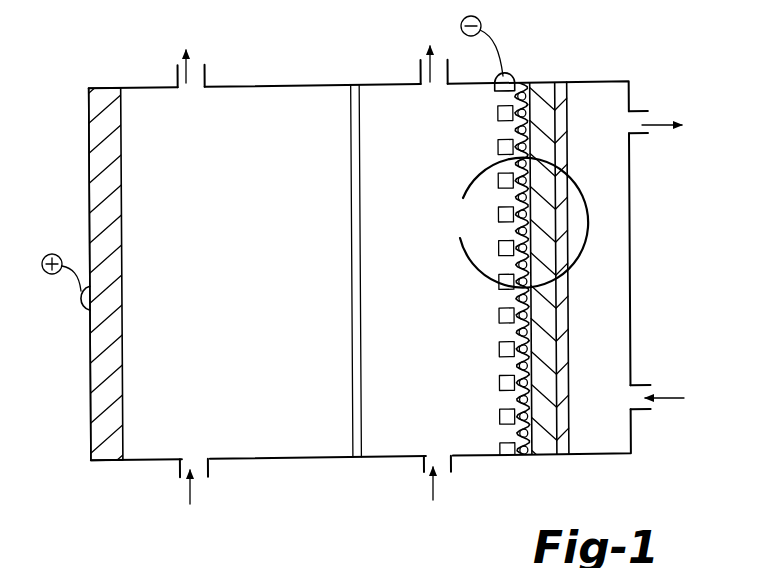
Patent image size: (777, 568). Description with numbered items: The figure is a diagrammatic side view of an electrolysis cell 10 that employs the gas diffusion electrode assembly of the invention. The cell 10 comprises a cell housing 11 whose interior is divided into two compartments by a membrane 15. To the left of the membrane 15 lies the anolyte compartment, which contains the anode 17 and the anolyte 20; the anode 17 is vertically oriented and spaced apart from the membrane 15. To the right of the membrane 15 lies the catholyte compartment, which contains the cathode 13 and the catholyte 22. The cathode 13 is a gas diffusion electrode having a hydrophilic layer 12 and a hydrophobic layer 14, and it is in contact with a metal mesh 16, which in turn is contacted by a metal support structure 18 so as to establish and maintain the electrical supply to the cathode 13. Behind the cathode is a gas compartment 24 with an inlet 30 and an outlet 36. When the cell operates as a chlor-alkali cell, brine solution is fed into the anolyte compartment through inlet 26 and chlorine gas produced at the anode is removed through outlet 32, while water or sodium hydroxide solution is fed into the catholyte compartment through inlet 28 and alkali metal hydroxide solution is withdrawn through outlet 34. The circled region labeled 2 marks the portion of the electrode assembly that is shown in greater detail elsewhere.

The detail area shown in FIG. 2 is at (510, 223).
The electrolysis cell 10 is at (88, 333).
The cell housing 11 is at (88, 90).
The hydrophilic layer 12 is at (538, 456).
The cathode 13 is at (559, 83).
The hydrophobic layer 14 is at (558, 457).
The membrane 15 is at (349, 117).
The metal mesh 16 is at (520, 84).
The anode 17 is at (97, 422).
The metal support structure 18 is at (505, 453).
The anolyte 20 is at (237, 287).
The catholyte 22 is at (440, 283).
The gas compartment 24 is at (614, 308).
The inlet 26 is at (190, 497).
The inlet 28 is at (433, 495).
The inlet 30 is at (677, 399).
The outlet 32 is at (188, 52).
The outlet 34 is at (429, 49).
The outlet 36 is at (673, 124).